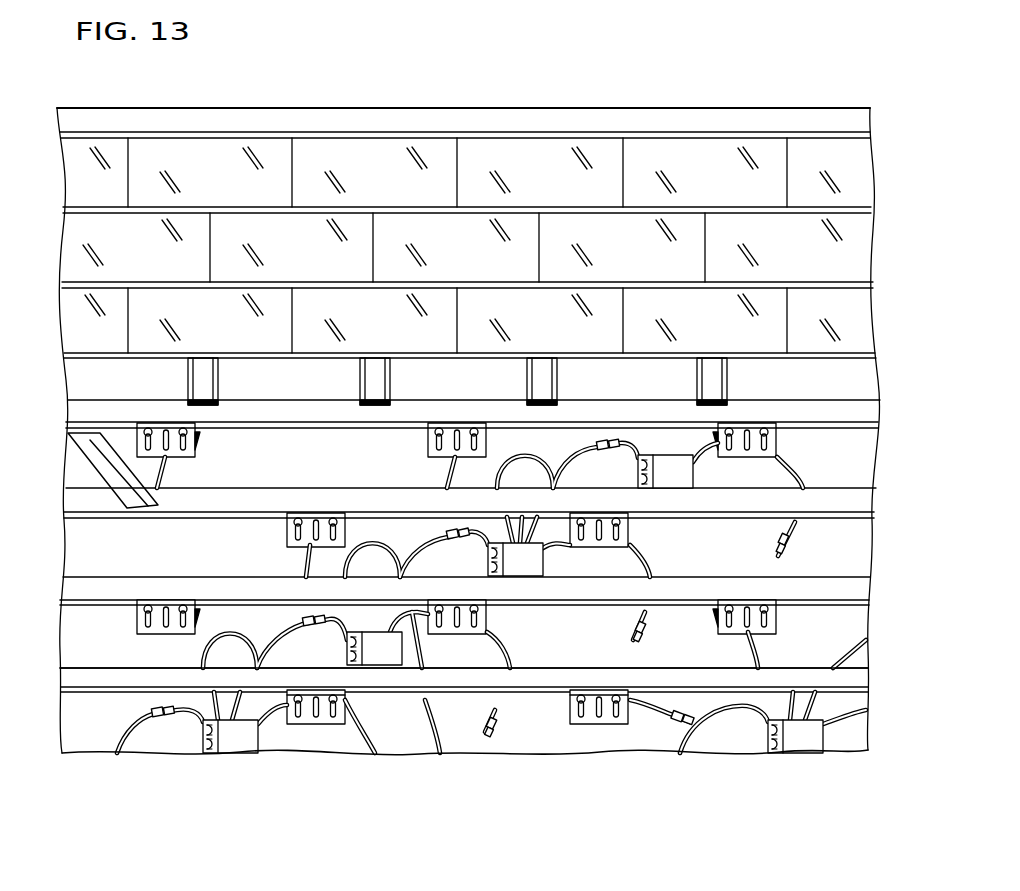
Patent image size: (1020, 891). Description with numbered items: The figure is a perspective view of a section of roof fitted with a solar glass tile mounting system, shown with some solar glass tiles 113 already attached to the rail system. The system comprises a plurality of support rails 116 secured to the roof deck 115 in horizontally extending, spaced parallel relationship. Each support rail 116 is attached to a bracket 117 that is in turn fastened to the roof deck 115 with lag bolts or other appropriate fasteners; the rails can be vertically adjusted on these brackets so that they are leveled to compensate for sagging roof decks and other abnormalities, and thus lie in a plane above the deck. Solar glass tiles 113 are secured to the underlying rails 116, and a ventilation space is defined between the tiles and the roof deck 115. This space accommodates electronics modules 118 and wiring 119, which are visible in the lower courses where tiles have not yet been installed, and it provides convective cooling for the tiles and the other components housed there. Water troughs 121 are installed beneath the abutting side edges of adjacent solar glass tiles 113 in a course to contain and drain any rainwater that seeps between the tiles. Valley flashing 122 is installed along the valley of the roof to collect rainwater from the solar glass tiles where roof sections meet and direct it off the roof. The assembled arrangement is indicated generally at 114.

The solar glass tiles 113 is at (312, 247).
The panel assembly 114 is at (672, 762).
The roof deck 115 is at (589, 648).
The support rails 116 is at (742, 503).
The bracket 117 is at (428, 443).
The electronics modules 118 is at (675, 473).
The wiring 119 is at (204, 652).
The water troughs 121 is at (360, 379).
The valley flashing 122 is at (78, 493).